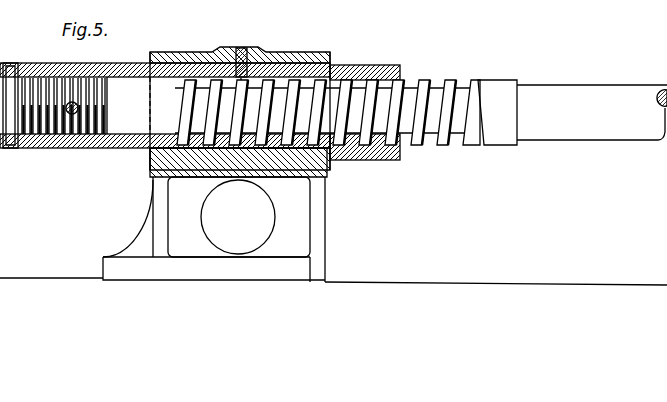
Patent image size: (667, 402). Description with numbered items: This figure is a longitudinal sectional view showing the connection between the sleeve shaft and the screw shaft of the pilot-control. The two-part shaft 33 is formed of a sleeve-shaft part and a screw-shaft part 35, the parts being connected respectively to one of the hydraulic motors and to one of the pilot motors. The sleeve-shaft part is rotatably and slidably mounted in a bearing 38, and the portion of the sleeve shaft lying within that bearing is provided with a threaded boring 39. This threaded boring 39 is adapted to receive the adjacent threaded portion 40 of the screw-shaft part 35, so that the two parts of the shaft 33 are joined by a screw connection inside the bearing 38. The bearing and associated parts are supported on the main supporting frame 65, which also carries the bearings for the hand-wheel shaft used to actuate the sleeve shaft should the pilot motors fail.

The main supporting frame 65 is at (36, 259).
The bearing 38 is at (281, 52).
The threaded boring 39 is at (364, 157).
The two-part shaft 33 is at (396, 78).
The threaded portion 40 is at (440, 140).
The screw-shaft part 35 is at (602, 126).